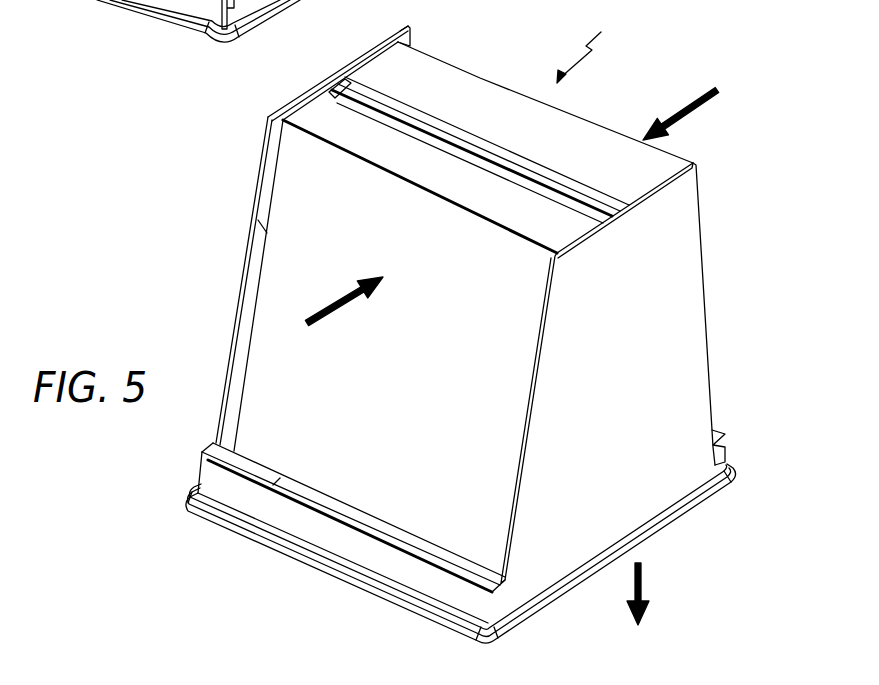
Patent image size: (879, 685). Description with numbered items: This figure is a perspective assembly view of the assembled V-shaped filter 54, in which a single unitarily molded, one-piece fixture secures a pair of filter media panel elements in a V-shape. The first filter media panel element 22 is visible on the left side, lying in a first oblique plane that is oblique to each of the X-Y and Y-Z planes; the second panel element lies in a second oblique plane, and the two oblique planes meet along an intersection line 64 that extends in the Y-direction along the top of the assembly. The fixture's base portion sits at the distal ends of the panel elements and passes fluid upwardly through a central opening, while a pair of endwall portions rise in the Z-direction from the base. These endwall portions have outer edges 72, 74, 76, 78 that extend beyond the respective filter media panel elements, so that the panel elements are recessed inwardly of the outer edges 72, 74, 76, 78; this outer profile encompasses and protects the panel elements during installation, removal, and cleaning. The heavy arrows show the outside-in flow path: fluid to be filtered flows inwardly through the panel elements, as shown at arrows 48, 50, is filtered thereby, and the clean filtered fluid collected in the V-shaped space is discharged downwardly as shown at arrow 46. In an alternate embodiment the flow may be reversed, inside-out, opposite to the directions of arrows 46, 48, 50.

The first filter media panel element 22 is at (273, 277).
The arrow 46 is at (643, 580).
The arrow 48 is at (335, 313).
The arrow 50 is at (682, 110).
The assembled V-shaped filter 54 is at (588, 44).
The intersection line 64 is at (443, 130).
The outer edge 72 is at (547, 307).
The outer edge 74 is at (698, 207).
The outer edge 76 is at (267, 137).
The outer edge 78 is at (410, 27).